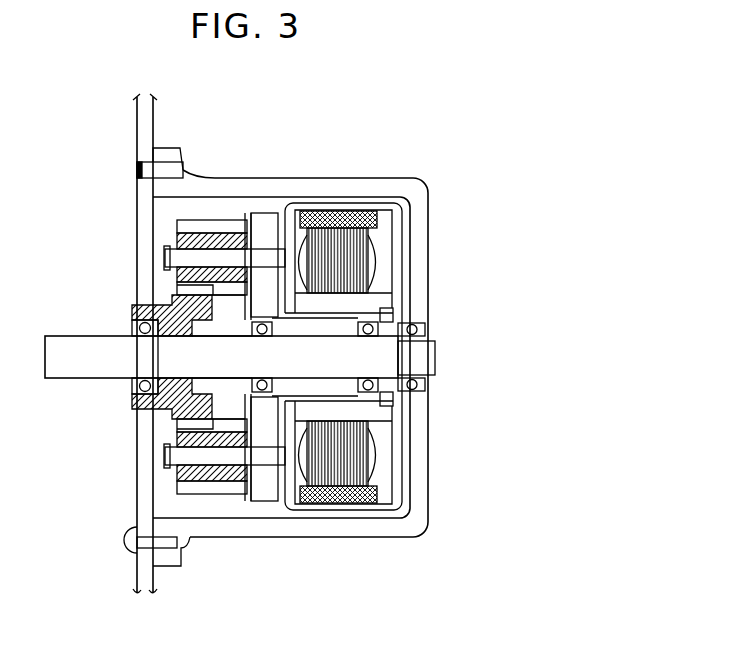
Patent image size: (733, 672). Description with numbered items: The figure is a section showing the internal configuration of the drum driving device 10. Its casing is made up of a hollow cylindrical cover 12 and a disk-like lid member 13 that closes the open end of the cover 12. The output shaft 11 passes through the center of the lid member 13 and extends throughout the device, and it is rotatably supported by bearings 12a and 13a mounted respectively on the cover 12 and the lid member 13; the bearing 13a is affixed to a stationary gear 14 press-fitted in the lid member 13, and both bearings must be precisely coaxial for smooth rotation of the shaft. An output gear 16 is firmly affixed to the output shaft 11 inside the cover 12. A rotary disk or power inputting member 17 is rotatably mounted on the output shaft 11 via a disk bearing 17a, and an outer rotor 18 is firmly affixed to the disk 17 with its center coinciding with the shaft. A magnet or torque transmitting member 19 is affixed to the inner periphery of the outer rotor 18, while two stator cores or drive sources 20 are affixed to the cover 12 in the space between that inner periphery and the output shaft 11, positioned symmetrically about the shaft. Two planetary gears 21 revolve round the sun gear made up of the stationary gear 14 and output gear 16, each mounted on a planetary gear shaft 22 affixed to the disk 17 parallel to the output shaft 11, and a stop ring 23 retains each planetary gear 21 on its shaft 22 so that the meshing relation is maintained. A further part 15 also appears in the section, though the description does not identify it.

The drum driving device 10 is at (510, 153).
The output shaft 11 is at (333, 366).
The cover 12 is at (368, 528).
The bearing 12a is at (428, 402).
The lid member 13 is at (137, 506).
The bearing 13a is at (132, 385).
The stationary gear 14 is at (168, 403).
The fixing bolt 15 is at (153, 166).
The output gear 16 is at (230, 402).
The rotary disk 17 is at (333, 208).
The disk bearing 17a is at (290, 318).
The outer rotor 18 is at (363, 210).
The magnet 19 is at (378, 222).
The stator core 20 is at (363, 262).
The planetary gear 21 is at (207, 228).
The planetary gear shaft 22 is at (265, 222).
The stop ring 23 is at (170, 240).